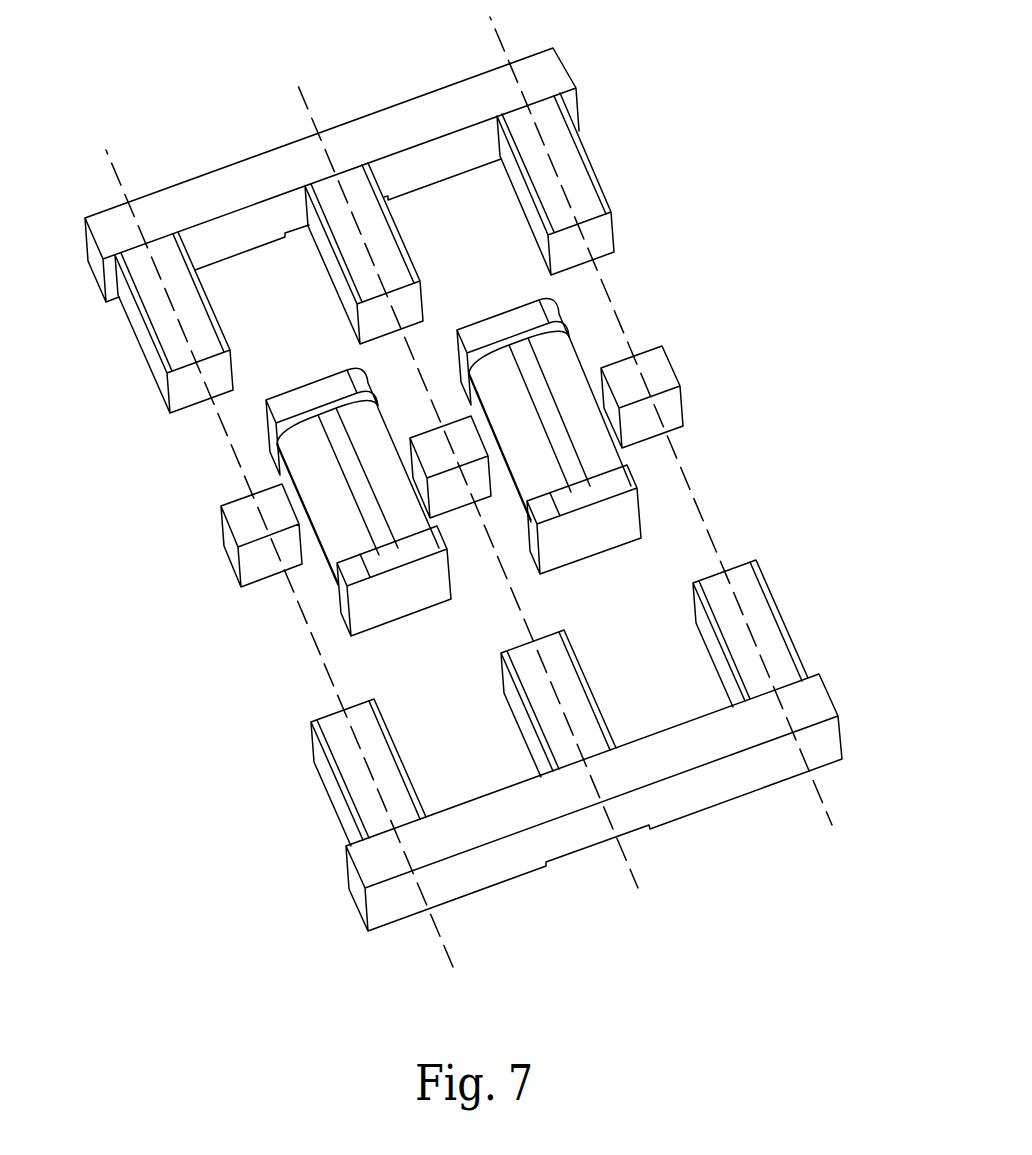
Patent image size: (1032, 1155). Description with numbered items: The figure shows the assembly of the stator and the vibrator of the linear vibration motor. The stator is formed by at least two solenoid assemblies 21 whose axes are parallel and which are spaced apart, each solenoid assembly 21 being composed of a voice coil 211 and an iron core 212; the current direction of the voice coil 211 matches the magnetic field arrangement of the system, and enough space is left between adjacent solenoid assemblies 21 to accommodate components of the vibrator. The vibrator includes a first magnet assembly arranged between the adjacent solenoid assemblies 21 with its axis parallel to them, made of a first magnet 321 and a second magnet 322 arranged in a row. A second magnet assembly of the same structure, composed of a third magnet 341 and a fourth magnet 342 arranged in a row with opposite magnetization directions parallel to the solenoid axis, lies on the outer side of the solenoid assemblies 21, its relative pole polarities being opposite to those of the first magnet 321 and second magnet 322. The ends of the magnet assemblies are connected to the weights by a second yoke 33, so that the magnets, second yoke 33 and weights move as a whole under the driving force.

The second yoke 33 is at (267, 180).
The fourth magnet 342 is at (137, 325).
The second magnet 322 is at (388, 248).
The third magnet 341 is at (343, 750).
The first magnet 321 is at (570, 690).
The solenoid assembly 21 is at (660, 400).
The voice coil 211 is at (596, 374).
The iron core 212 is at (613, 480).